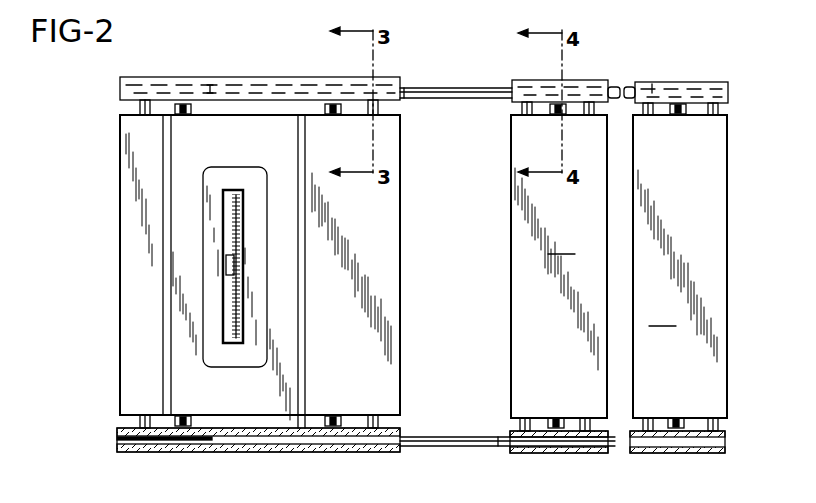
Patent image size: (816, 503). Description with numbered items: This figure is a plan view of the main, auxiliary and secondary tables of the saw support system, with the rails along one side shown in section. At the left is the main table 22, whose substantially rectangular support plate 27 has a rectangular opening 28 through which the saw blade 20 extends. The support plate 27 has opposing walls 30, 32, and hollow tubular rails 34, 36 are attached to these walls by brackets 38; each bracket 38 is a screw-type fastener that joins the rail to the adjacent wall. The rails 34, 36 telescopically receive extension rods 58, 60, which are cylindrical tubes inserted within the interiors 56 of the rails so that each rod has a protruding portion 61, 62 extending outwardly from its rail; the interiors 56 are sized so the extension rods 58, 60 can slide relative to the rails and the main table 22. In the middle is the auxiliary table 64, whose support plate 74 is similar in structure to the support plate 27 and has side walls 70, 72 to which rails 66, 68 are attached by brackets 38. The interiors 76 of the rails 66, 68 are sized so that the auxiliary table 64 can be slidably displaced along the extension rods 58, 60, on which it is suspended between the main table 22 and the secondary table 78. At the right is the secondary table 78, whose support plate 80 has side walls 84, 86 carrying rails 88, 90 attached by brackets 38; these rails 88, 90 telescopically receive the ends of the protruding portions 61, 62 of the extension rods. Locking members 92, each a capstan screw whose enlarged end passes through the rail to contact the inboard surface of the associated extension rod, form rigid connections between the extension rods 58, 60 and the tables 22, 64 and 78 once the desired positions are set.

The saw blade 20 is at (237, 344).
The main table 22 is at (296, 267).
The support plate 27 is at (372, 242).
The rectangular opening 28 is at (240, 190).
The opposing wall 30 is at (198, 115).
The opposing wall 32 is at (310, 414).
The rail 34 is at (265, 78).
The rail 36 is at (282, 453).
The bracket 38 is at (122, 103).
The interior 56 is at (192, 78).
The extension rod 58 is at (481, 87).
The extension rod 60 is at (430, 446).
The protruding portion 61 is at (490, 100).
The protruding portion 62 is at (492, 437).
The auxiliary table 64 is at (530, 298).
The rail 66 is at (577, 80).
The rail 68 is at (542, 453).
The side wall 70 is at (572, 108).
The side wall 72 is at (552, 418).
The support plate 74 is at (561, 244).
The interior 76 is at (652, 92).
The secondary table 78 is at (702, 256).
The support plate 80 is at (662, 316).
The side wall 84 is at (697, 115).
The side wall 86 is at (658, 418).
The rail 88 is at (688, 82).
The rail 90 is at (660, 455).
The locking member 92 is at (182, 115).